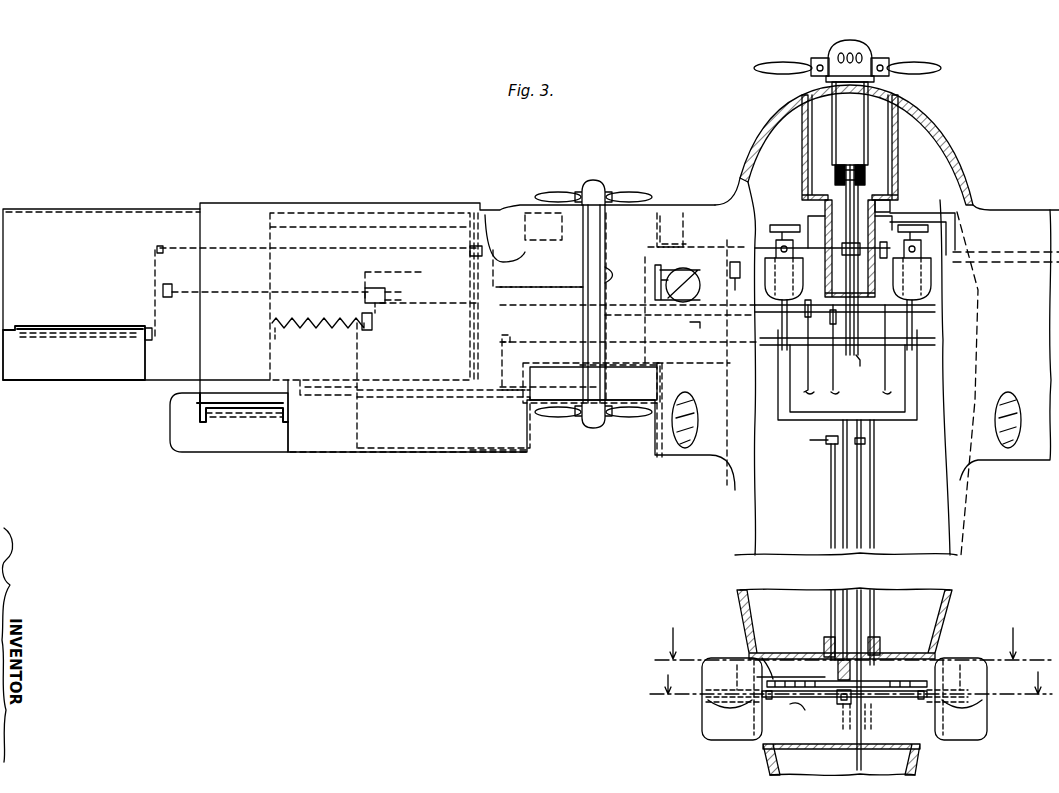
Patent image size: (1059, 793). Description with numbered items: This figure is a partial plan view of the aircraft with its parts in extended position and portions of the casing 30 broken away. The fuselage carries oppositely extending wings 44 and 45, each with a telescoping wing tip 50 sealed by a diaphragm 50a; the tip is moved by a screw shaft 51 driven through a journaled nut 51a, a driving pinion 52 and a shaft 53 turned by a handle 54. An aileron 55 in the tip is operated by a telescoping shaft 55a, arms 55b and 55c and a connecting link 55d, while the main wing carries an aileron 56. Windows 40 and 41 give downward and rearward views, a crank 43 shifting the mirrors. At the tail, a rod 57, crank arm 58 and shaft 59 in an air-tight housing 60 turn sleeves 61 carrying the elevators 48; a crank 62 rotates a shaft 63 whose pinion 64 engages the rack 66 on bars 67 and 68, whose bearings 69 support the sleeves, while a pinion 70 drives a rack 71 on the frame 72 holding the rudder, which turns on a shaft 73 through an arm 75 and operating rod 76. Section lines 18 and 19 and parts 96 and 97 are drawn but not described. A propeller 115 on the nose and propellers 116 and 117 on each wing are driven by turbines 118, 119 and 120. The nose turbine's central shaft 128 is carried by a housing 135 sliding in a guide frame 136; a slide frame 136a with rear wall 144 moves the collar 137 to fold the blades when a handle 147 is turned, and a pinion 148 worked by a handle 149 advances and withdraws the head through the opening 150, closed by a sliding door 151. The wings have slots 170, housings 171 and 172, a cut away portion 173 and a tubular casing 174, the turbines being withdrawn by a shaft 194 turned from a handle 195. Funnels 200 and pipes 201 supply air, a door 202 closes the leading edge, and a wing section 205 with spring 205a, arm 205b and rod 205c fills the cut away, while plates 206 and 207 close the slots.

The section line 18 is at (853, 635).
The section line 19 is at (851, 678).
The casing 30 is at (955, 150).
The window 40 is at (688, 284).
The window 41 is at (688, 448).
The crank 43 is at (737, 282).
The wing 44 is at (1030, 209).
The wing 45 is at (298, 203).
The elevator 48 is at (705, 727).
The wing tip 50 is at (150, 207).
The diaphragm 50a is at (688, 240).
The screw shaft 51 is at (312, 290).
The journaled nut 51a is at (386, 293).
The driving pinion 52 is at (376, 322).
The shaft 53 is at (456, 312).
The handle 54 is at (803, 357).
The aileron 55 is at (103, 372).
The telescoping shaft 55a is at (456, 250).
The arm 55b is at (160, 247).
The arm 55c is at (151, 340).
The connecting link 55d is at (152, 284).
The aileron 56 is at (242, 448).
The rod 57 is at (830, 504).
The crank arm 58 is at (840, 706).
The shaft 59 is at (792, 717).
The air-tight housing 60 is at (841, 761).
The sleeve 61 is at (845, 713).
The crank 62 is at (808, 444).
The shaft 63 is at (842, 534).
The pinion 64 is at (822, 681).
The rack 66 is at (775, 680).
The bar 67 is at (712, 666).
The bar 68 is at (958, 666).
The bearing 69 is at (844, 706).
The pinion 70 is at (822, 640).
The rack 71 is at (862, 686).
The frame 72 is at (855, 645).
The shaft 73 is at (843, 723).
The arm 75 is at (876, 720).
The operating rod 76 is at (876, 512).
The connector 96 is at (860, 432).
The shaft 97 is at (862, 540).
The propeller 115 is at (790, 62).
The propeller 116 is at (621, 196).
The propeller 117 is at (626, 418).
The turbine 118 is at (872, 48).
The turbine 119 is at (594, 183).
The turbine 120 is at (590, 428).
The central shaft 128 is at (862, 280).
The housing 135 is at (862, 132).
The guide frame 136 is at (870, 180).
The slide frame 136a is at (838, 175).
The collar 137 is at (852, 46).
The rear wall 144 is at (838, 181).
The crank or handle 147 is at (871, 354).
The pinion 148 is at (855, 255).
The crank or handle 149 is at (878, 355).
The opening 150 is at (805, 92).
The sliding door 151 is at (892, 95).
The slot 170 is at (650, 210).
The housing 171 is at (562, 242).
The housing 172 is at (548, 362).
The cut away portion 173 is at (532, 455).
The tubular casing 174 is at (625, 308).
The shaft 194 is at (946, 330).
The crank or handle 195 is at (847, 349).
The funnel 200 is at (503, 215).
The pipe 201 is at (520, 296).
The door 202 is at (362, 210).
The wing section 205 is at (400, 446).
The spring 205a is at (322, 334).
The arm 205b is at (362, 364).
The rod 205c is at (318, 321).
The plate 206 is at (556, 196).
The plate 207 is at (550, 398).